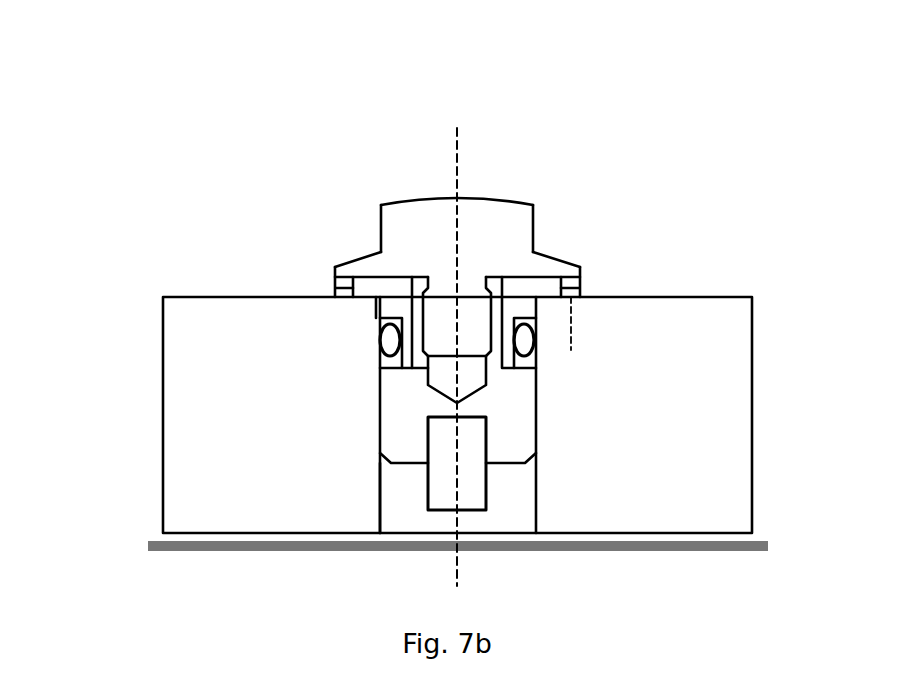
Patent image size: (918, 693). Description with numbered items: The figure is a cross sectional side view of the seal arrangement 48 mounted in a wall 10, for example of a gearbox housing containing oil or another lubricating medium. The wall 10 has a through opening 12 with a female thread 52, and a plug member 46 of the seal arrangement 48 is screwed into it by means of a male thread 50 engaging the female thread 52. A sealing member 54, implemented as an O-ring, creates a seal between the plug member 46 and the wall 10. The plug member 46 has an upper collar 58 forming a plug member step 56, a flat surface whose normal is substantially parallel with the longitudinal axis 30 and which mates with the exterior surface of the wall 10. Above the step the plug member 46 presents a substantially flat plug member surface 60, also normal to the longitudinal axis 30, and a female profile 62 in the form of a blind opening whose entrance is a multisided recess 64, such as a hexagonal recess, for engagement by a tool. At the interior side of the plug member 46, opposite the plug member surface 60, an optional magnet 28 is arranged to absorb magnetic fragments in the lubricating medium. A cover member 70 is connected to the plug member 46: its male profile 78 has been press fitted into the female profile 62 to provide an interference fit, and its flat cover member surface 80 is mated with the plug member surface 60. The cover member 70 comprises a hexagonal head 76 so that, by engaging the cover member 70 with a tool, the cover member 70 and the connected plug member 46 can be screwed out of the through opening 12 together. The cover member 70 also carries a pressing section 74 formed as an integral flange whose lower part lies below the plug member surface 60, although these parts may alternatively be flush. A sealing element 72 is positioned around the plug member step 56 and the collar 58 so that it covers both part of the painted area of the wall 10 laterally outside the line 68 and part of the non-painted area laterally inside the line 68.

The wall 10 is at (202, 383).
The through opening 12 is at (502, 505).
The magnet 28 is at (469, 497).
The longitudinal axis 30 is at (458, 163).
The plug member 46 is at (520, 421).
The seal arrangement 48 is at (320, 118).
The male thread 50 is at (382, 438).
The female thread 52 is at (379, 513).
The sealing member 54 is at (388, 339).
The plug member step 56 is at (373, 299).
The collar 58 is at (352, 296).
The plug member surface 60 is at (374, 274).
The female profile 62 is at (423, 377).
The multisided recess 64 is at (522, 273).
The line 68 is at (572, 351).
The cover member 70 is at (430, 199).
The sealing element 72 is at (338, 288).
The pressing section 74 is at (336, 266).
The head 76 is at (533, 228).
The male profile 78 is at (488, 345).
The cover member surface 80 is at (374, 256).